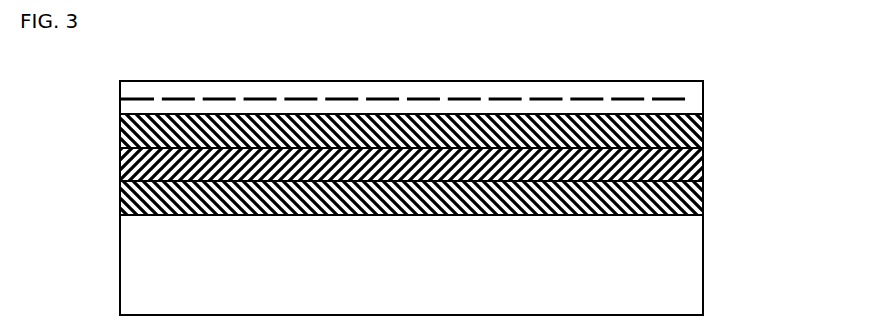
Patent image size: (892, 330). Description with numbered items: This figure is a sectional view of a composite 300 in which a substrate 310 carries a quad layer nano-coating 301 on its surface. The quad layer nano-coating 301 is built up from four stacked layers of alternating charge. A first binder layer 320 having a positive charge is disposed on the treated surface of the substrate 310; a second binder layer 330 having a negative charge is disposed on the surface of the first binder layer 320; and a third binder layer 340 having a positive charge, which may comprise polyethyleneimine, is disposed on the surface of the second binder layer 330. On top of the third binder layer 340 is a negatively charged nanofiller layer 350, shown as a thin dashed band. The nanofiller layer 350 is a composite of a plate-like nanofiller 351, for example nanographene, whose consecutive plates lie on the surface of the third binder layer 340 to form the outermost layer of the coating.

The composite 300 is at (120, 81).
The quad layer nano-coating 301 is at (785, 82).
The substrate 310 is at (713, 216).
The first binder layer 320 is at (713, 181).
The second binder layer 330 is at (713, 148).
The third binder layer 340 is at (713, 114).
The nanofiller layer 350 is at (713, 82).
The nanofiller 351 is at (552, 98).